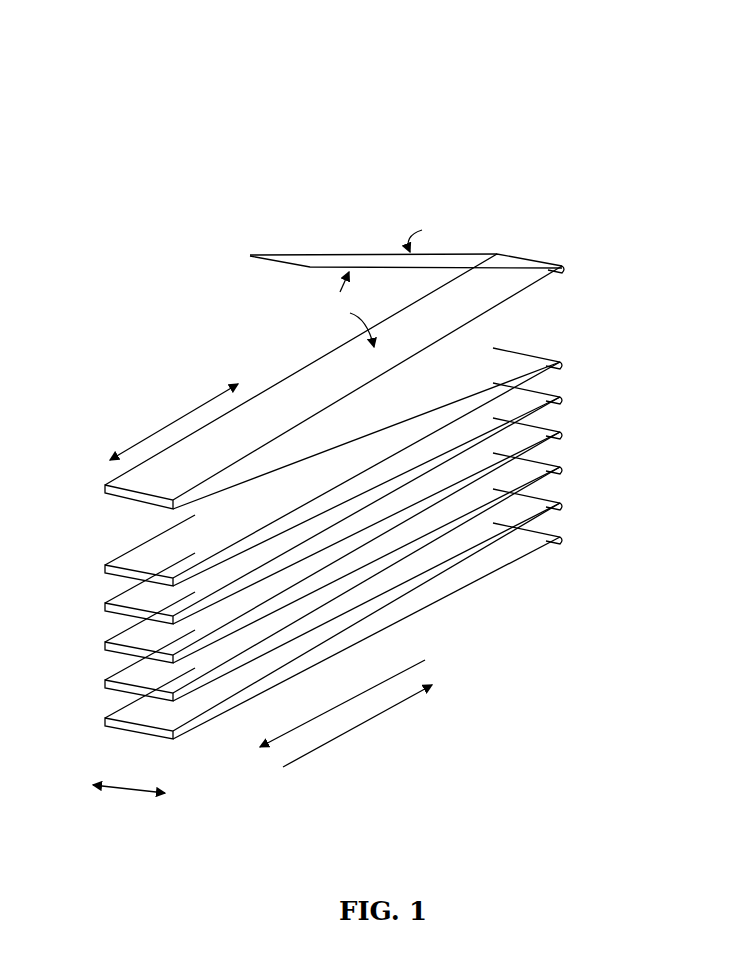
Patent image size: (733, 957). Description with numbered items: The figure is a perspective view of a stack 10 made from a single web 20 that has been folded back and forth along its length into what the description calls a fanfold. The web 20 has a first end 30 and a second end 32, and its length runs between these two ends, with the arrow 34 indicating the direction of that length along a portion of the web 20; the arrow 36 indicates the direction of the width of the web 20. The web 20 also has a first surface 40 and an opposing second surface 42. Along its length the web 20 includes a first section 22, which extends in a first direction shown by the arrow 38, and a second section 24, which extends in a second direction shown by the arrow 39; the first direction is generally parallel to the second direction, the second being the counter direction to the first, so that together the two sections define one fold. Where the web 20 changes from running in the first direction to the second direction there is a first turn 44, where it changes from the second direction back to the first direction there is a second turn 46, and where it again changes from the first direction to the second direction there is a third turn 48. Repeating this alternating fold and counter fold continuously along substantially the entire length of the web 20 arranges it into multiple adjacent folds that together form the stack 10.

The stack 10 is at (158, 83).
The web 20 is at (320, 254).
The first section 22 is at (483, 582).
The second section 24 is at (523, 532).
The first end 30 is at (252, 258).
The second end 32 is at (555, 535).
The arrow 34 is at (174, 422).
The arrow 36 is at (129, 799).
The arrow 38 is at (342, 703).
The arrow 39 is at (357, 726).
The first surface 40 is at (431, 233).
The second surface 42 is at (349, 309).
The first turn 44 is at (120, 728).
The second turn 46 is at (547, 497).
The third turn 48 is at (103, 688).